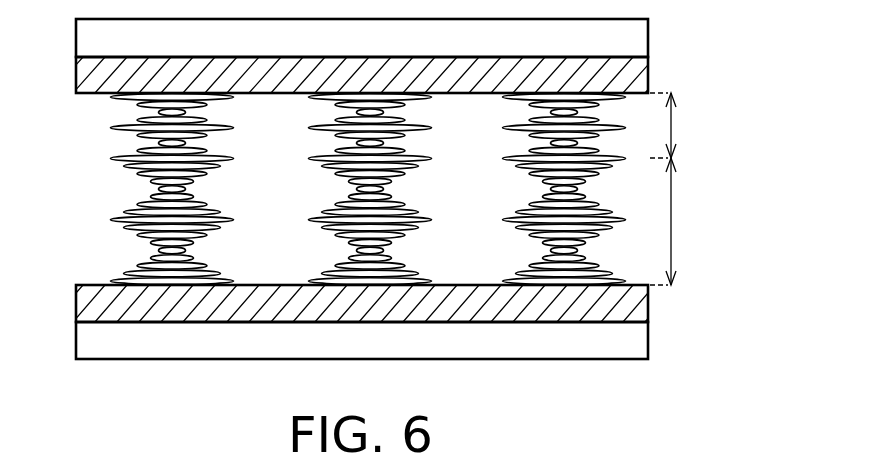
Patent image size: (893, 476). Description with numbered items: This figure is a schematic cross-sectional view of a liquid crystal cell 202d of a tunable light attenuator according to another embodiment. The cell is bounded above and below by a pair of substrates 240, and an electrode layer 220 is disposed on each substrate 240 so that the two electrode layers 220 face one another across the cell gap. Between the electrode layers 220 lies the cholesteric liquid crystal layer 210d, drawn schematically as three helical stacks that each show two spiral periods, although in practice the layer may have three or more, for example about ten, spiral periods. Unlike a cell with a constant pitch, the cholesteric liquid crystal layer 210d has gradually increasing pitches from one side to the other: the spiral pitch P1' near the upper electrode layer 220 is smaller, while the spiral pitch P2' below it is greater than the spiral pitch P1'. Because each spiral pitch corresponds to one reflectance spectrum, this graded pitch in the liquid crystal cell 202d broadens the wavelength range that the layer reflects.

The liquid crystal cell 202d is at (416, 212).
The cholesteric liquid crystal layer 210d is at (120, 158).
The electrode layer 220 is at (635, 78).
The substrate 240 is at (635, 40).
The spiral pitch P1' is at (681, 125).
The spiral pitch P2' is at (681, 221).